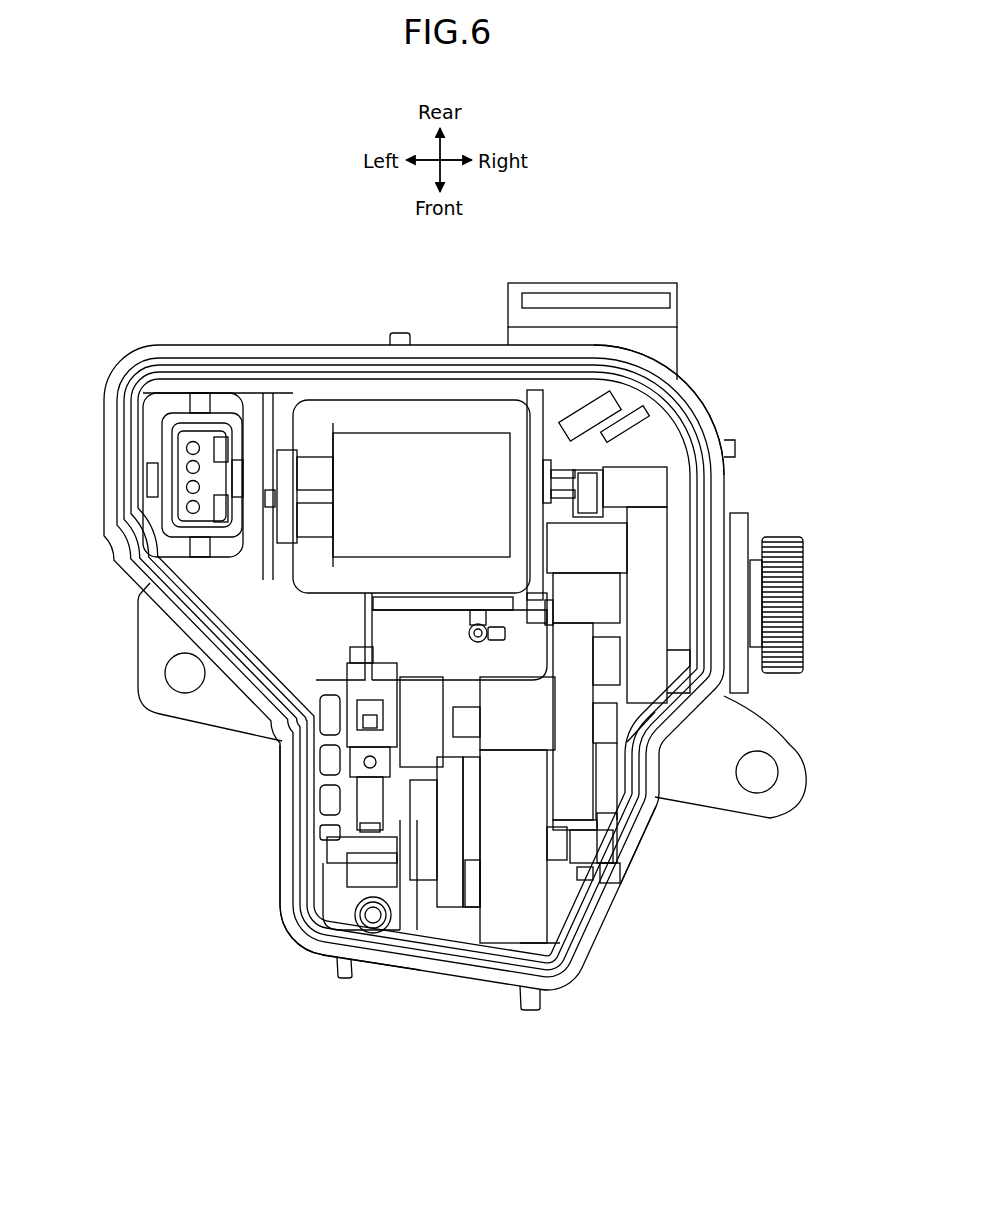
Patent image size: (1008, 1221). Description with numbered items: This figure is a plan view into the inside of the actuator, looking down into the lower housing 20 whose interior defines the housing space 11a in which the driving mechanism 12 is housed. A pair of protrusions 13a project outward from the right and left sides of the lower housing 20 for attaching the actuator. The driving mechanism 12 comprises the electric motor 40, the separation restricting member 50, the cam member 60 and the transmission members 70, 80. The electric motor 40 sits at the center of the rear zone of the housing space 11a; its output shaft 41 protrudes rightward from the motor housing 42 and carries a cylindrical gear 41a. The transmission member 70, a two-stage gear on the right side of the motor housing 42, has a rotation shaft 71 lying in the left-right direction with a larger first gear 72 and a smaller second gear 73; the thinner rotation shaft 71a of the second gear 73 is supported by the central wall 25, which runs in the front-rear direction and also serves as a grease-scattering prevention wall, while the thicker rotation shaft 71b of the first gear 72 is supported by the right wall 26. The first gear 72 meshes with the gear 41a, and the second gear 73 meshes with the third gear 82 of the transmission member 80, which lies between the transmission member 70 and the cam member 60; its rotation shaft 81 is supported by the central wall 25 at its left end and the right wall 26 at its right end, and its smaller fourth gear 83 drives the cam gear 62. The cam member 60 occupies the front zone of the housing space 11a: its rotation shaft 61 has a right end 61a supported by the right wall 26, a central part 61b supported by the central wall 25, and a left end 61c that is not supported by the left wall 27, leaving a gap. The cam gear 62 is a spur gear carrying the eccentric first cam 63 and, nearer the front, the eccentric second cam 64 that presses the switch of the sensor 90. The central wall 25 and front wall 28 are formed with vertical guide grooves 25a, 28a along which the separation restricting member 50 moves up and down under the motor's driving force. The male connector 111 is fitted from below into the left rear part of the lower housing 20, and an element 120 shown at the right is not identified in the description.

The housing space 11a is at (558, 408).
The driving mechanism 12 is at (636, 431).
The protrusions 13a is at (143, 700).
The lower housing 20 is at (224, 344).
The central wall 25 is at (535, 400).
The guide groove 25a is at (437, 762).
The right wall 26 is at (674, 708).
The left wall 27 is at (318, 758).
The front wall 28 is at (338, 952).
The guide groove 28a is at (417, 930).
The electric motor 40 is at (403, 440).
The output shaft 41 is at (557, 490).
The cylindrical gear 41a is at (640, 490).
The motor housing 42 is at (415, 417).
The separation restricting member 50 is at (450, 910).
The cam member 60 is at (539, 950).
The rotation shaft 61 is at (640, 907).
The right end 61a is at (612, 873).
The central part 61b is at (410, 927).
The left end 61c is at (333, 848).
The cam gear 62 is at (517, 917).
The first cam 63 is at (472, 873).
The second cam 64 is at (360, 877).
The transmission member 70 is at (720, 702).
The rotation shaft 71 is at (635, 598).
The rotation shaft 71a is at (553, 600).
The rotation shaft 71b is at (677, 583).
The first gear 72 is at (648, 530).
The second gear 73 is at (572, 565).
The transmission member 80 is at (590, 858).
The rotation shaft 81 is at (603, 725).
The third gear 82 is at (574, 800).
The fourth gear 83 is at (510, 700).
The sensor 90 is at (353, 680).
The male connector 111 is at (180, 447).
The output gear 120 is at (807, 607).